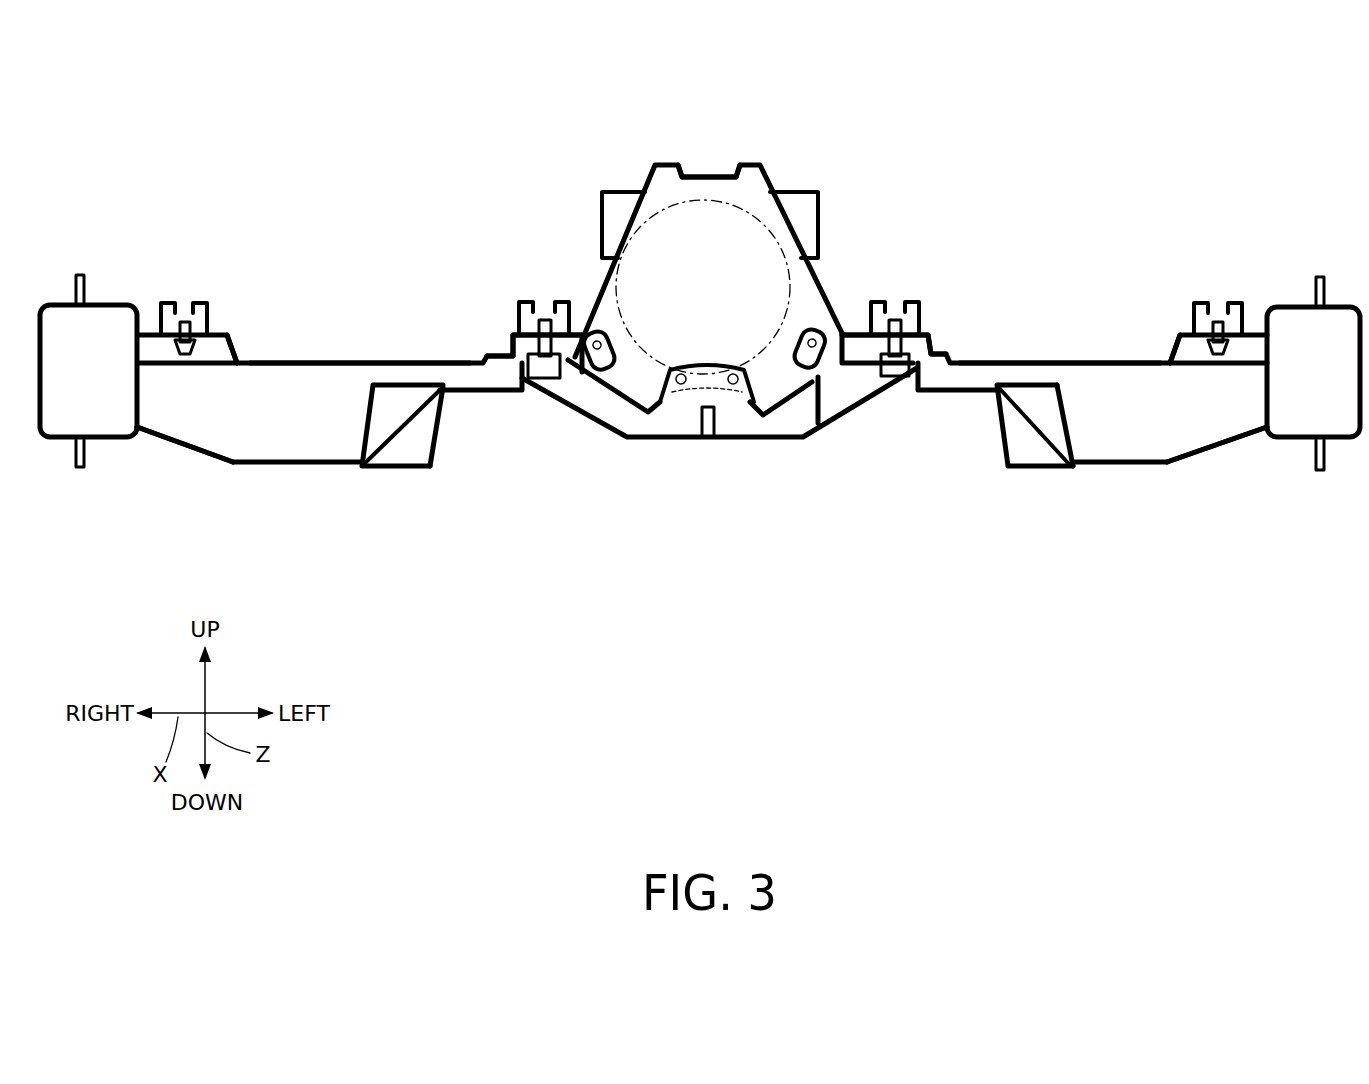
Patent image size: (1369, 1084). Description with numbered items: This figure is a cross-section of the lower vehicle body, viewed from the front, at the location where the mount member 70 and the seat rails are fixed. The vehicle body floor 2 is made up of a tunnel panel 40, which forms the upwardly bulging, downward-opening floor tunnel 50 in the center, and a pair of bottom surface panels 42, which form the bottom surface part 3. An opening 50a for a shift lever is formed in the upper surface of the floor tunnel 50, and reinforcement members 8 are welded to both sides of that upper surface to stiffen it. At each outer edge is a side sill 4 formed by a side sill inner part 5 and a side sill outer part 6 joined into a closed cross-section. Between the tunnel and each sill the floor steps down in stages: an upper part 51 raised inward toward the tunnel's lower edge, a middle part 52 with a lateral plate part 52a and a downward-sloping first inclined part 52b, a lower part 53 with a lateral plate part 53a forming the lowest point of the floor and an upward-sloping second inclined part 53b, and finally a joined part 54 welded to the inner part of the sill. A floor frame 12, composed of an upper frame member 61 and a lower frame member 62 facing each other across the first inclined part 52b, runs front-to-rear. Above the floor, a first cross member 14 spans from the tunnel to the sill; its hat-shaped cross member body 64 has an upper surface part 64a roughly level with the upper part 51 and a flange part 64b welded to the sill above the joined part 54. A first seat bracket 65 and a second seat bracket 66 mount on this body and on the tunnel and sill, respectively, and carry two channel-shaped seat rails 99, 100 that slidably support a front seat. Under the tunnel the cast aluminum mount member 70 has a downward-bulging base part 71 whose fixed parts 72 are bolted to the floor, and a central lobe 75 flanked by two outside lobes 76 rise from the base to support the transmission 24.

The vehicle body floor 2 is at (720, 487).
The bottom surface part 3 is at (720, 487).
The side sill 4 is at (700, 324).
The side sill inner part 5 is at (60, 226).
The side sill outer part 6 is at (55, 303).
The reinforcement member 8 is at (603, 192).
The floor frame 12 is at (709, 486).
The first cross member 14 is at (705, 280).
The transmission 24 is at (678, 212).
The tunnel panel 40 is at (720, 229).
The bottom surface panel 42 is at (707, 507).
The floor tunnel 50 is at (734, 227).
The opening 50a is at (713, 170).
The upper part 51 is at (550, 320).
The middle part 52 is at (751, 437).
The lateral plate part 52a is at (467, 397).
The first inclined part 52b is at (500, 450).
The lower part 53 is at (707, 507).
The lateral plate part 53a is at (240, 463).
The second inclined part 53b is at (183, 450).
The joined part 54 is at (143, 402).
The upper frame member 61 is at (402, 435).
The lower frame member 62 is at (375, 473).
The cross member body 64 is at (705, 302).
The upper surface part 64a is at (376, 357).
The flange part 64b is at (158, 333).
The first seat bracket 65 is at (513, 338).
The second seat bracket 66 is at (222, 338).
The mount member 70 is at (719, 393).
The base part 71 is at (705, 438).
The fixed part 72 is at (577, 373).
The central lobe 75 is at (706, 365).
The outside lobe 76 is at (603, 332).
The seat rail 99 is at (719, 305).
The seat rail 100 is at (208, 330).